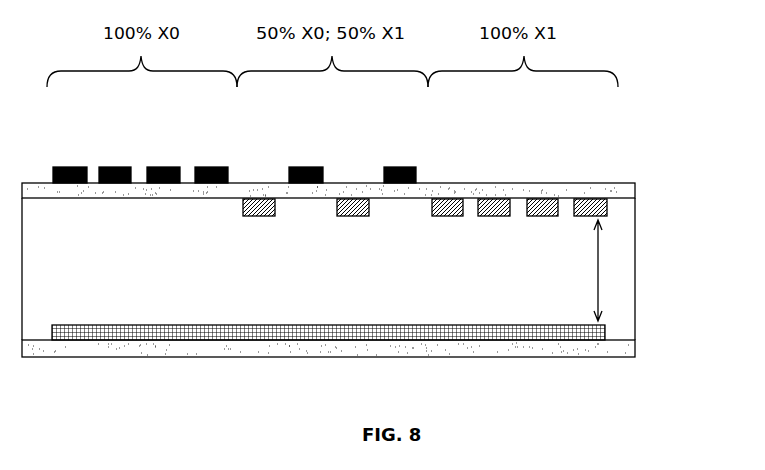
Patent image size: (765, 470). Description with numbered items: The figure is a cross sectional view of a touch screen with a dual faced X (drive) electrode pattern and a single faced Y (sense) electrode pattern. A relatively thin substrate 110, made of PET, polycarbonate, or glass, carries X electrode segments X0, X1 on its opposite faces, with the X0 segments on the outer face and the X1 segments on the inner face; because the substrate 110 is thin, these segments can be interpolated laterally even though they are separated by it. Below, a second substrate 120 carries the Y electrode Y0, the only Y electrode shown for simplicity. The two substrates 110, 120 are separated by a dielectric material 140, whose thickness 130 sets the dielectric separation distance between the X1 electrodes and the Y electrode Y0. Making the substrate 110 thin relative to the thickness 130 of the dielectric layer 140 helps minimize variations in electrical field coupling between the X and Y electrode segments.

The substrate 110 is at (636, 186).
The substrate 120 is at (636, 347).
The dielectric separation distance 130 is at (598, 248).
The dielectric layer 140 is at (636, 288).
The X electrode segment X0 is at (220, 147).
The X electrode segment X1 is at (411, 237).
The Y electrode Y0 is at (100, 324).